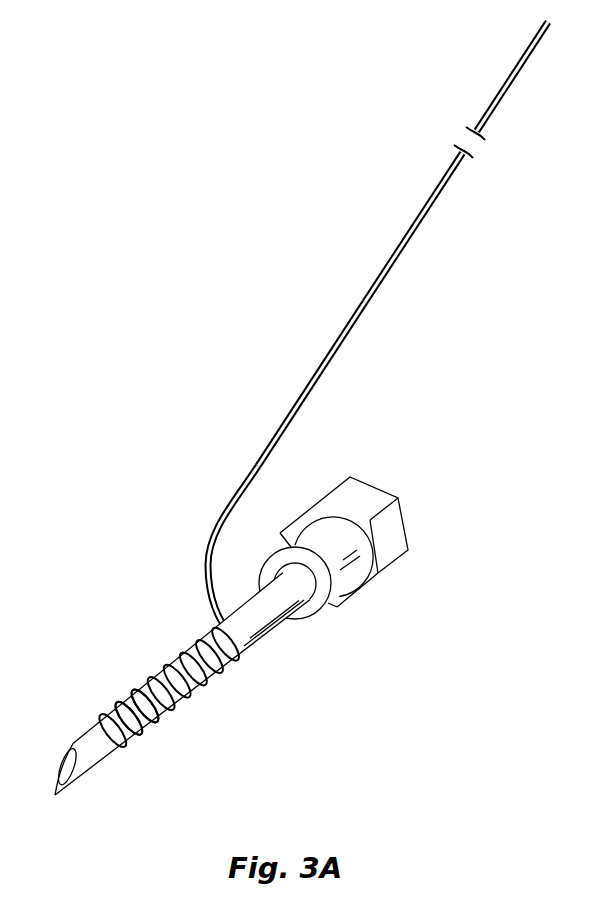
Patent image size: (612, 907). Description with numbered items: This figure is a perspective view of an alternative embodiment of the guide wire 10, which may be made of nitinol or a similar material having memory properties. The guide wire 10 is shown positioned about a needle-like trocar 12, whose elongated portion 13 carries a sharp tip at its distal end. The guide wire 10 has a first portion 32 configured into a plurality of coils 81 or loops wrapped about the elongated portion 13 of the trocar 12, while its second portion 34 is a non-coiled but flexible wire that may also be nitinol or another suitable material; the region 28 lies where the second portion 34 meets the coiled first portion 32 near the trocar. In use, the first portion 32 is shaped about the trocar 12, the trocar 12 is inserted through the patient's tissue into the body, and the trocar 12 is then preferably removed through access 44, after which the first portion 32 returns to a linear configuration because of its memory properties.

The guide wire 10 is at (388, 282).
The second portion 34 is at (268, 439).
The tube junction 28 is at (202, 578).
The trocar 12 is at (273, 617).
The elongated portion 13 is at (205, 673).
The access 44 is at (257, 637).
The first portion 32 is at (136, 680).
The coils 81 is at (155, 725).